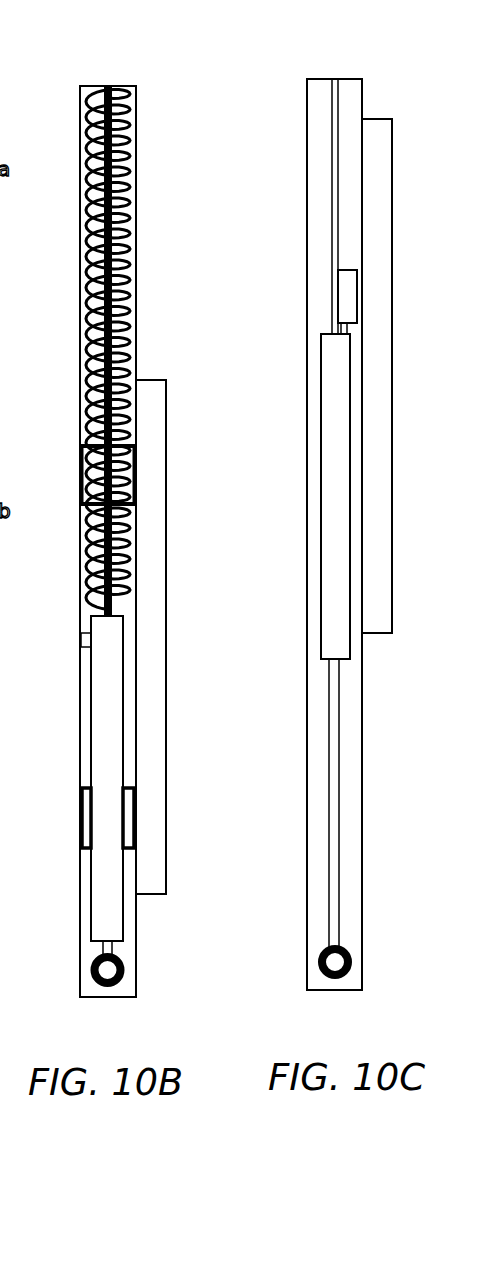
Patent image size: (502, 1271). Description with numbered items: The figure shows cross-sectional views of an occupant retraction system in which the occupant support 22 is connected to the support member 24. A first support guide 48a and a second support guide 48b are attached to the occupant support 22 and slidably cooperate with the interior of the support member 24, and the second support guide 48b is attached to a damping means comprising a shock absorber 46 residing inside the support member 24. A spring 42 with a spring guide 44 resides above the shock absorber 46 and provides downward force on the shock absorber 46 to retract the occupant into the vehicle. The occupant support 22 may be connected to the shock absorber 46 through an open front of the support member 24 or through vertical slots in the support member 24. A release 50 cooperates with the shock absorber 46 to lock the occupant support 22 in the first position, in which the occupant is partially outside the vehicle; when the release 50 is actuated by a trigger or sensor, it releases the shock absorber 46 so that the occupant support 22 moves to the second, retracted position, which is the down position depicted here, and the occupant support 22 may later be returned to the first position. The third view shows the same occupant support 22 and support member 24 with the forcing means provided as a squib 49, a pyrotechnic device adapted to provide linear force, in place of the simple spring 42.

In FIG. 10B, the occupant support 22 is at (152, 562).
In FIG. 10C, the occupant support 22 is at (376, 128).
In FIG. 10B, the support member 24 is at (127, 942).
In FIG. 10C, the support member 24 is at (355, 875).
In FIG. 10B, the spring 42 is at (136, 258).
In FIG. 10B, the spring guide 44 is at (105, 86).
In FIG. 10C, the spring guide 44 is at (333, 140).
In FIG. 10B, the shock absorber 46 is at (108, 720).
In FIG. 10C, the shock absorber 46 is at (337, 397).
In FIG. 10B, the first support guide 48a is at (138, 482).
In FIG. 10B, the second support guide 48b is at (138, 822).
In FIG. 10C, the squib 49 is at (346, 300).
In FIG. 10B, the release 50 is at (85, 645).